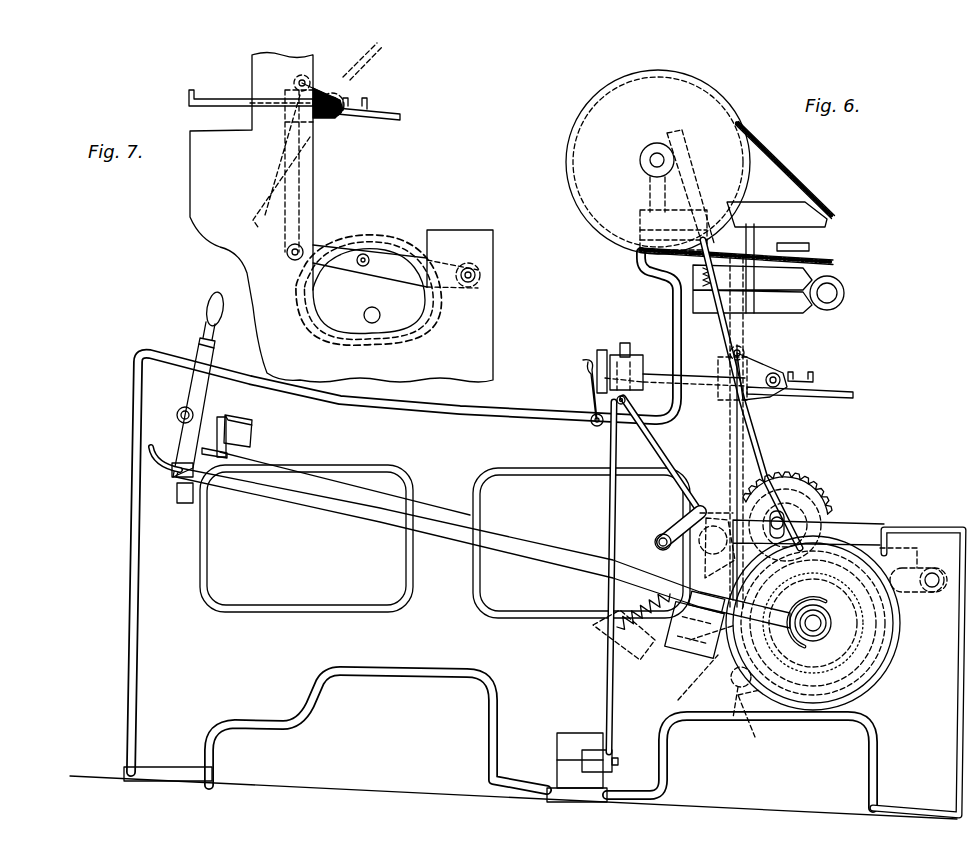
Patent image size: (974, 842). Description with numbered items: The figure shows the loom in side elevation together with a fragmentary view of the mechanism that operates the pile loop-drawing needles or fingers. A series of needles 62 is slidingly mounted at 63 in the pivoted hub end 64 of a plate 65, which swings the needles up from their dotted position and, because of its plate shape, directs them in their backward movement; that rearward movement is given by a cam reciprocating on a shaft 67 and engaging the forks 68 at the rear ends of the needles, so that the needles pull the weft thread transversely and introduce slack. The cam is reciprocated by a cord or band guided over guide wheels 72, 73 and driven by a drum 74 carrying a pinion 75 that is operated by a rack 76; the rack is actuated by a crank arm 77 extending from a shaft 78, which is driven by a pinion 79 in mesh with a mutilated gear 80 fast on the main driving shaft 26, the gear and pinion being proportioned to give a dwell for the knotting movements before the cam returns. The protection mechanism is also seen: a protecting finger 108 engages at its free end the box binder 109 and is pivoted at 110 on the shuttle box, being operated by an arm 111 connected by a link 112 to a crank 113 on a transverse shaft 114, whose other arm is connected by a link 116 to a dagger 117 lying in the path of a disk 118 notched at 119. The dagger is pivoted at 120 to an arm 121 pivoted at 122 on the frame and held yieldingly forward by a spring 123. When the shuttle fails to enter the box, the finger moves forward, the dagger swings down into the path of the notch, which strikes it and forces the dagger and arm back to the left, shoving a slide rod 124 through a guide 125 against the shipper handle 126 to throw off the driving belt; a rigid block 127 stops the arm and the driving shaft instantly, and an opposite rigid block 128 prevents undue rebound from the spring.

In FIG. 7, the main driving shaft 26 is at (385, 304).
In FIG. 6, the main driving shaft 26 is at (818, 620).
In FIG. 7, the needles 62 is at (222, 99).
In FIG. 6, the needles 62 is at (668, 358).
In FIG. 7, the sliding mounting 63 is at (340, 95).
In FIG. 6, the sliding mounting 63 is at (786, 376).
In FIG. 7, the pivoted hub end 64 is at (340, 113).
In FIG. 6, the pivoted hub end 64 is at (780, 389).
In FIG. 7, the plate 65 is at (387, 119).
In FIG. 6, the plate 65 is at (855, 394).
In FIG. 6, the shaft 67 is at (843, 300).
In FIG. 7, the forks 68 is at (369, 103).
In FIG. 6, the forks 68 is at (815, 380).
In FIG. 6, the guide wheel 72 is at (822, 198).
In FIG. 6, the guide wheel 73 is at (833, 254).
In FIG. 6, the drum 74 is at (658, 162).
In FIG. 6, the pinion 75 is at (655, 144).
In FIG. 6, the rack 76 is at (700, 165).
In FIG. 6, the crank arm 77 is at (835, 531).
In FIG. 6, the shaft 78 is at (803, 520).
In FIG. 6, the pinion 79 is at (822, 485).
In FIG. 6, the mutilated gear 80 is at (858, 565).
In FIG. 6, the protecting finger 108 is at (586, 366).
In FIG. 6, the box binder 109 is at (598, 352).
In FIG. 6, the pivot 110 is at (600, 425).
In FIG. 6, the arm 111 is at (652, 441).
In FIG. 6, the link 112 is at (677, 469).
In FIG. 6, the crank 113 is at (693, 514).
In FIG. 6, the transverse shaft 114 is at (658, 547).
In FIG. 6, the link 116 is at (716, 545).
In FIG. 6, the dagger 117 is at (772, 520).
In FIG. 6, the disk 118 is at (880, 675).
In FIG. 6, the notch 119 is at (862, 628).
In FIG. 6, the pivot 120 is at (740, 677).
In FIG. 6, the arm 121 is at (695, 668).
In FIG. 6, the pivot 122 is at (757, 719).
In FIG. 6, the spring 123 is at (594, 577).
In FIG. 6, the slide rod 124 is at (445, 513).
In FIG. 6, the guide 125 is at (262, 450).
In FIG. 6, the shipper handle 126 is at (173, 437).
In FIG. 6, the rigid block 127 is at (632, 650).
In FIG. 6, the rigid block 128 is at (685, 623).